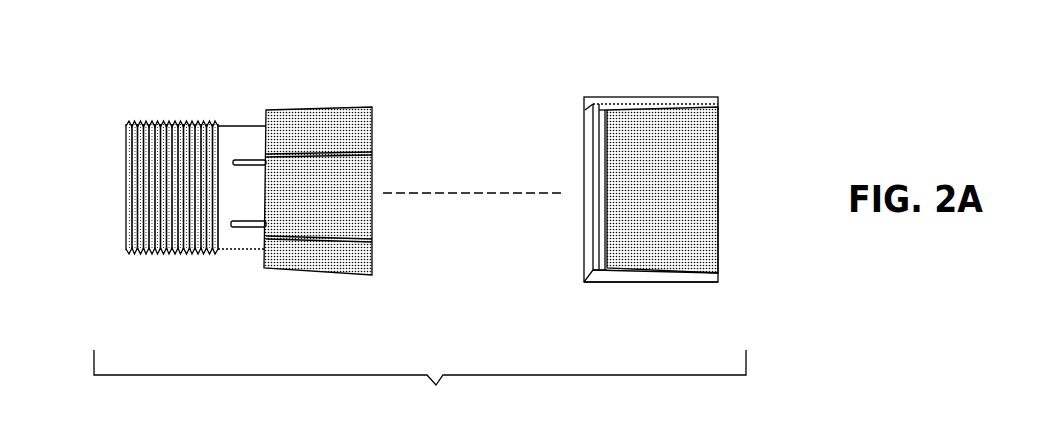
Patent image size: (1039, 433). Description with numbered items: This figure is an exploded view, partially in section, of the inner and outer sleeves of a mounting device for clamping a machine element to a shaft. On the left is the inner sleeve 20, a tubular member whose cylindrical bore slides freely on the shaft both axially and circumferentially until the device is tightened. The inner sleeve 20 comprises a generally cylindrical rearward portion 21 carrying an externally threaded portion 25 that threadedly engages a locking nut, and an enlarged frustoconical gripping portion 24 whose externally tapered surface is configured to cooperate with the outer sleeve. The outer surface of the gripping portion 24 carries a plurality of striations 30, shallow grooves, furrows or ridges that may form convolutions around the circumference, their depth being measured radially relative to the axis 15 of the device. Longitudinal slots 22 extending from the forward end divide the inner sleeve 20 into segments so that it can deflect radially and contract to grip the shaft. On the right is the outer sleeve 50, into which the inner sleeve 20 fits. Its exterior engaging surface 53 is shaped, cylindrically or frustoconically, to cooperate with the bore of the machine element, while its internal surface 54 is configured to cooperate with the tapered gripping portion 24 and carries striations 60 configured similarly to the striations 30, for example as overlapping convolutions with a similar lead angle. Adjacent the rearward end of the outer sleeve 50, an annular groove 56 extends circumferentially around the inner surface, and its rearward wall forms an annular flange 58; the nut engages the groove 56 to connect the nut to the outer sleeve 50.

The axis 15 is at (480, 194).
The inner sleeve 20 is at (240, 202).
The rearward portion 21 is at (224, 138).
The slots 22 is at (254, 160).
The gripping portion 24 is at (318, 156).
The externally threaded portion 25 is at (152, 125).
The striations 30 is at (302, 253).
The outer sleeve 50 is at (670, 199).
The engaging surface 53 is at (652, 97).
The internal surface 54 is at (693, 272).
The annular groove 56 is at (604, 108).
The annular flange 58 is at (590, 99).
The striations 60 is at (708, 135).